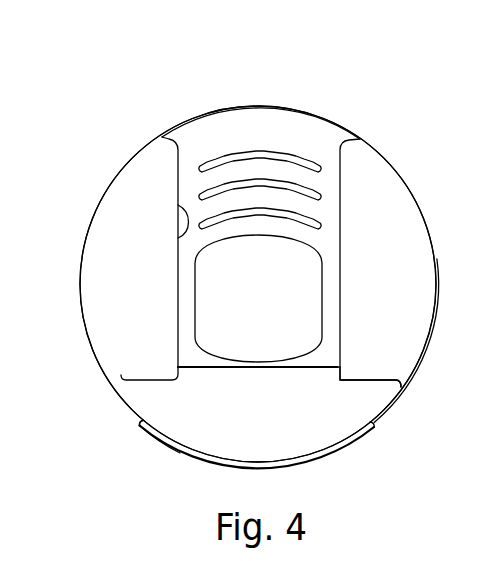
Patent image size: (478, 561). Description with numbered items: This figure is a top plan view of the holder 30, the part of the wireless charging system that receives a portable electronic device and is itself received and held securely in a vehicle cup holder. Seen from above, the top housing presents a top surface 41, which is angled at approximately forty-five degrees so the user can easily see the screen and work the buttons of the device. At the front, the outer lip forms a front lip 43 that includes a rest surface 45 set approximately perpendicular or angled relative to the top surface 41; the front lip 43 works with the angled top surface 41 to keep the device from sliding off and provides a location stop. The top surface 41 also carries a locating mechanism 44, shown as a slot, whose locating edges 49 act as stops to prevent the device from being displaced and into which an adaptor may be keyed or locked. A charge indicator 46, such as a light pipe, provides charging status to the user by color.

The holder 30 is at (317, 112).
The top surface 41 is at (197, 128).
The front lip 43 is at (134, 418).
The locating mechanism 44 is at (235, 123).
The rest surface 45 is at (322, 413).
The charge indicator 46 is at (331, 453).
The locating edges 49 is at (176, 207).